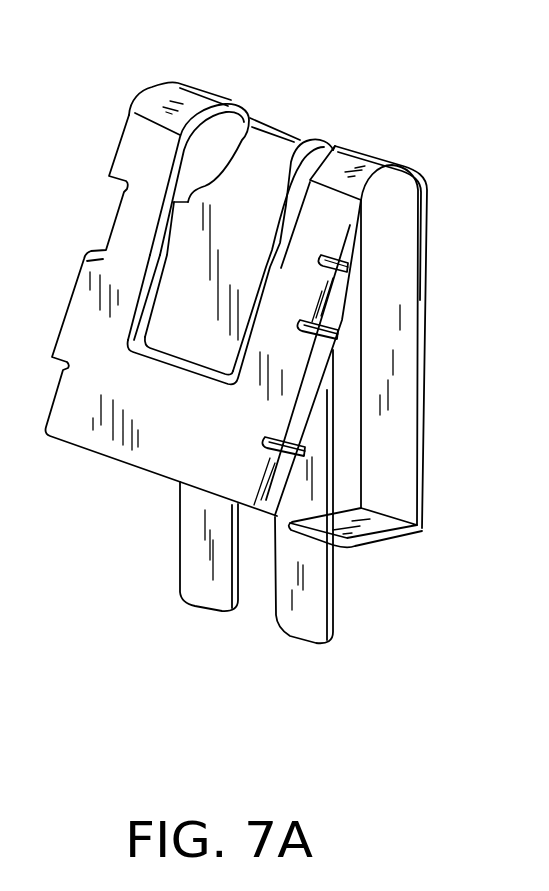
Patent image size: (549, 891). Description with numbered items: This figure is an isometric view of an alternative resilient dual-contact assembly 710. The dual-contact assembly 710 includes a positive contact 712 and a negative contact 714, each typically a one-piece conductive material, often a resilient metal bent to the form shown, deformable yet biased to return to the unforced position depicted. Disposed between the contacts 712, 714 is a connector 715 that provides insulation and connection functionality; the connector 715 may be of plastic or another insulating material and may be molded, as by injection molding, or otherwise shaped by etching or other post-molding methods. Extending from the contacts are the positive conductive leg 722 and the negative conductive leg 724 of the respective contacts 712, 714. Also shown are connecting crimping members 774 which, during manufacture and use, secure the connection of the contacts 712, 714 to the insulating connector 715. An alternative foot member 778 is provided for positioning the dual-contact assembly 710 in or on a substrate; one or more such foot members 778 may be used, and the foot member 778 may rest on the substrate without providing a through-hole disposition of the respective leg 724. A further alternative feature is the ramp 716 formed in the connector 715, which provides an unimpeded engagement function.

The dual-contact assembly 710 is at (342, 113).
The positive contact 712 is at (254, 158).
The negative contact 714 is at (157, 407).
The connector 715 is at (148, 310).
The ramp 716 is at (137, 355).
The positive conductive leg 722 is at (308, 628).
The negative conductive leg 724 is at (207, 590).
The crimping member 774 is at (107, 233).
The foot member 778 is at (370, 530).